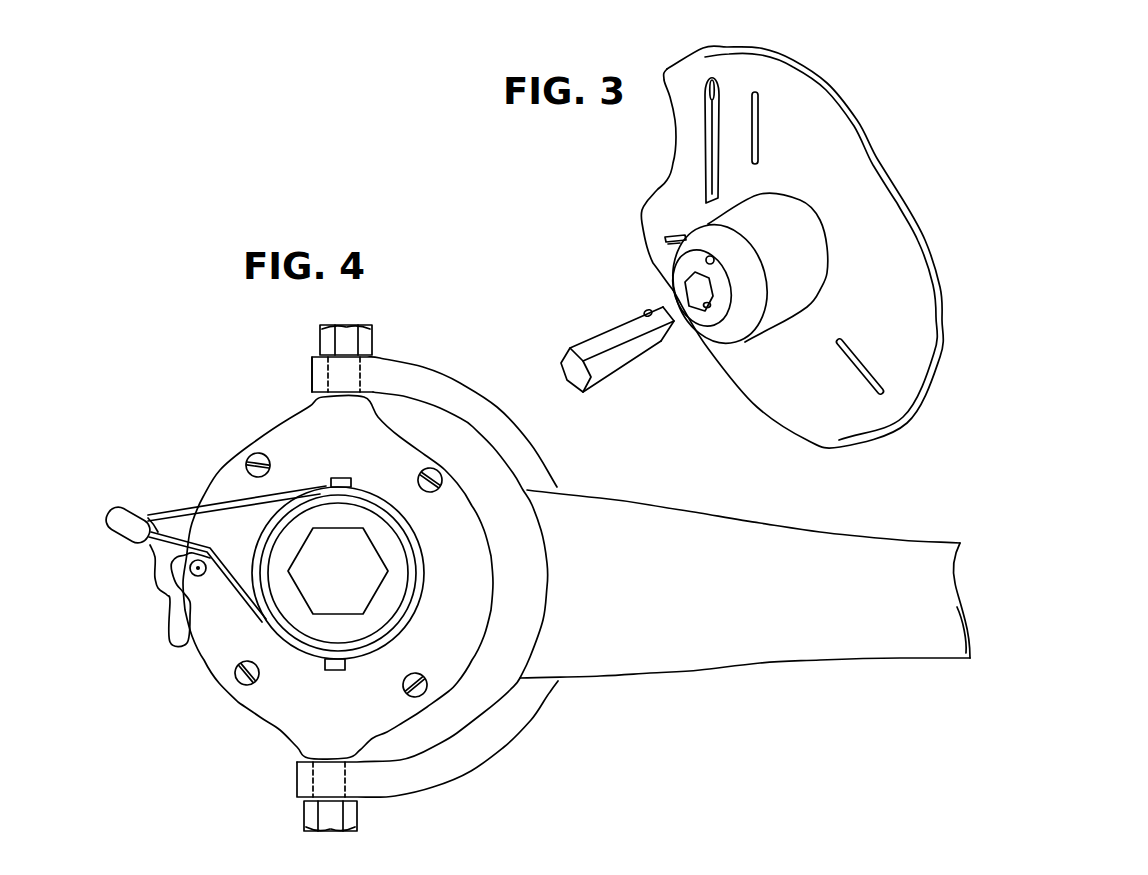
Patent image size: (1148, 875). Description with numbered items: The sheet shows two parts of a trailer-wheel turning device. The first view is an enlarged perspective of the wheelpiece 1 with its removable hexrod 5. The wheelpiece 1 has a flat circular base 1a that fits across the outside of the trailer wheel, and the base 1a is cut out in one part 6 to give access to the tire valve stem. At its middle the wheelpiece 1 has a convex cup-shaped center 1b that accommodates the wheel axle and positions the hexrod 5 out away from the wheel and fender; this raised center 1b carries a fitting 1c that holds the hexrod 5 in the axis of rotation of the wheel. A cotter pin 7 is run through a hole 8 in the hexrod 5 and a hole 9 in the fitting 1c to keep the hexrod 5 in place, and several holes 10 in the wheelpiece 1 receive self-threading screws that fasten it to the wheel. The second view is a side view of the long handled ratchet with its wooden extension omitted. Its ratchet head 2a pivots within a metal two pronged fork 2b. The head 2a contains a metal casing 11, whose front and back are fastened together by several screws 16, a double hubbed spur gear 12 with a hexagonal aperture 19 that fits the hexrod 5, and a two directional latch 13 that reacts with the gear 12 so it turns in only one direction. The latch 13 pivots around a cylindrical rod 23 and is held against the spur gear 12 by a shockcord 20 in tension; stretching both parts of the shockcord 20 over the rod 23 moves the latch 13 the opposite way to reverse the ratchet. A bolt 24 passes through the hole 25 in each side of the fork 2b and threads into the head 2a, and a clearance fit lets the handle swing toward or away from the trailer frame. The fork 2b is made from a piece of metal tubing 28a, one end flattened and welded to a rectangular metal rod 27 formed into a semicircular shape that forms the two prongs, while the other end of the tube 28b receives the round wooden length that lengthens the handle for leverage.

In FIG. 3, the wheelpiece 1 is at (866, 132).
In FIG. 3, the flat circular base 1a is at (877, 270).
In FIG. 3, the convex cup-shaped center 1b is at (792, 268).
In FIG. 3, the fitting 1c is at (737, 320).
In FIG. 3, the hexrod 5 is at (590, 343).
In FIG. 3, the cut out part 6 is at (672, 120).
In FIG. 3, the cotter pin 7 is at (722, 94).
In FIG. 3, the hole in hexrod 8 is at (647, 309).
In FIG. 3, the hole in fitting 9 is at (712, 252).
In FIG. 3, the holes in wheelpiece 10 is at (760, 124).
In FIG. 4, the ratchet head 2a is at (286, 432).
In FIG. 4, the two pronged fork 2b is at (433, 380).
In FIG. 4, the metal casing 11 is at (465, 620).
In FIG. 4, the double hubbed spur gear 12 is at (350, 523).
In FIG. 4, the two directional latch 13 is at (158, 590).
In FIG. 4, the screws 16 is at (419, 473).
In FIG. 4, the hexagonal aperture 19 is at (348, 571).
In FIG. 4, the shockcord 20 is at (267, 497).
In FIG. 4, the cylindrical rod 23 is at (205, 574).
In FIG. 4, the bolt 24 is at (362, 326).
In FIG. 4, the hole in fork 25 is at (364, 374).
In FIG. 4, the rectangular metal rod 27 is at (480, 418).
In FIG. 4, the metal tubing 28a is at (600, 608).
In FIG. 4, the other end of metal tube 28b is at (940, 588).